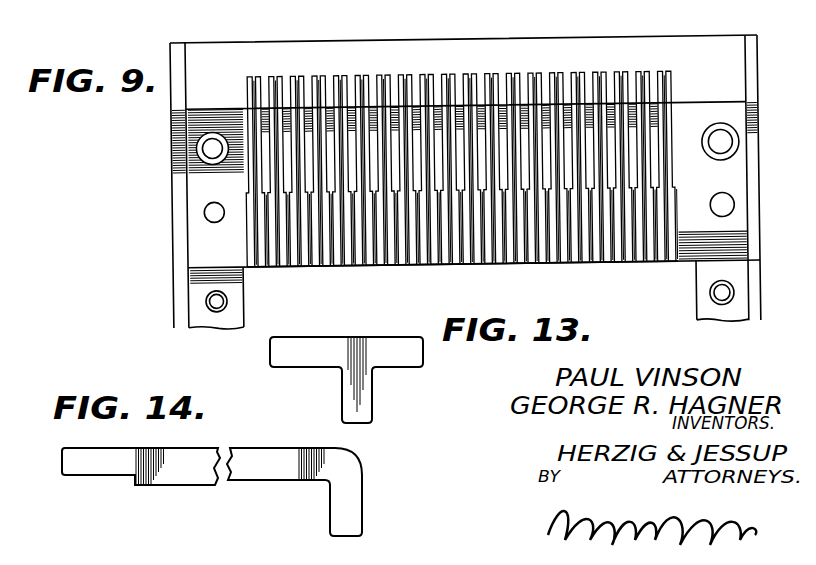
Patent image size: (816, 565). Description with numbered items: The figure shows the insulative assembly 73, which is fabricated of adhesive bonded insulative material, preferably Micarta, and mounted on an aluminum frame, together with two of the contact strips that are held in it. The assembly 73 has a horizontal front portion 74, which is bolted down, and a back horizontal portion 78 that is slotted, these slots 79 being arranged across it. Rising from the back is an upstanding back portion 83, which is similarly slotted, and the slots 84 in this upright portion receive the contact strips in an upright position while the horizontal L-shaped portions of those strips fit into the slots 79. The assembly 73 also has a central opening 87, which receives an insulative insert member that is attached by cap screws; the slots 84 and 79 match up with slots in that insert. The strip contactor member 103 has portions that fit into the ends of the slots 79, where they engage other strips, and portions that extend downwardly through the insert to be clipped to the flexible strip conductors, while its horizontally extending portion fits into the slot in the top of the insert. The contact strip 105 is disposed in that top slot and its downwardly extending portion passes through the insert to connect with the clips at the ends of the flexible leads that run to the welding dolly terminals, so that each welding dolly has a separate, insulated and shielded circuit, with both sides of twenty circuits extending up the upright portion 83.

In FIG. 9, the assembly 73 is at (170, 196).
In FIG. 9, the horizontal front portion 74 is at (715, 160).
In FIG. 9, the back horizontal portion 78 is at (202, 256).
In FIG. 9, the slots 79 is at (408, 268).
In FIG. 9, the upstanding back portion 83 is at (527, 53).
In FIG. 9, the slots 84 is at (315, 80).
In FIG. 9, the central opening 87 is at (673, 318).
In FIG. 13, the strip contactor member 103 is at (402, 362).
In FIG. 14, the contact strip 105 is at (245, 477).